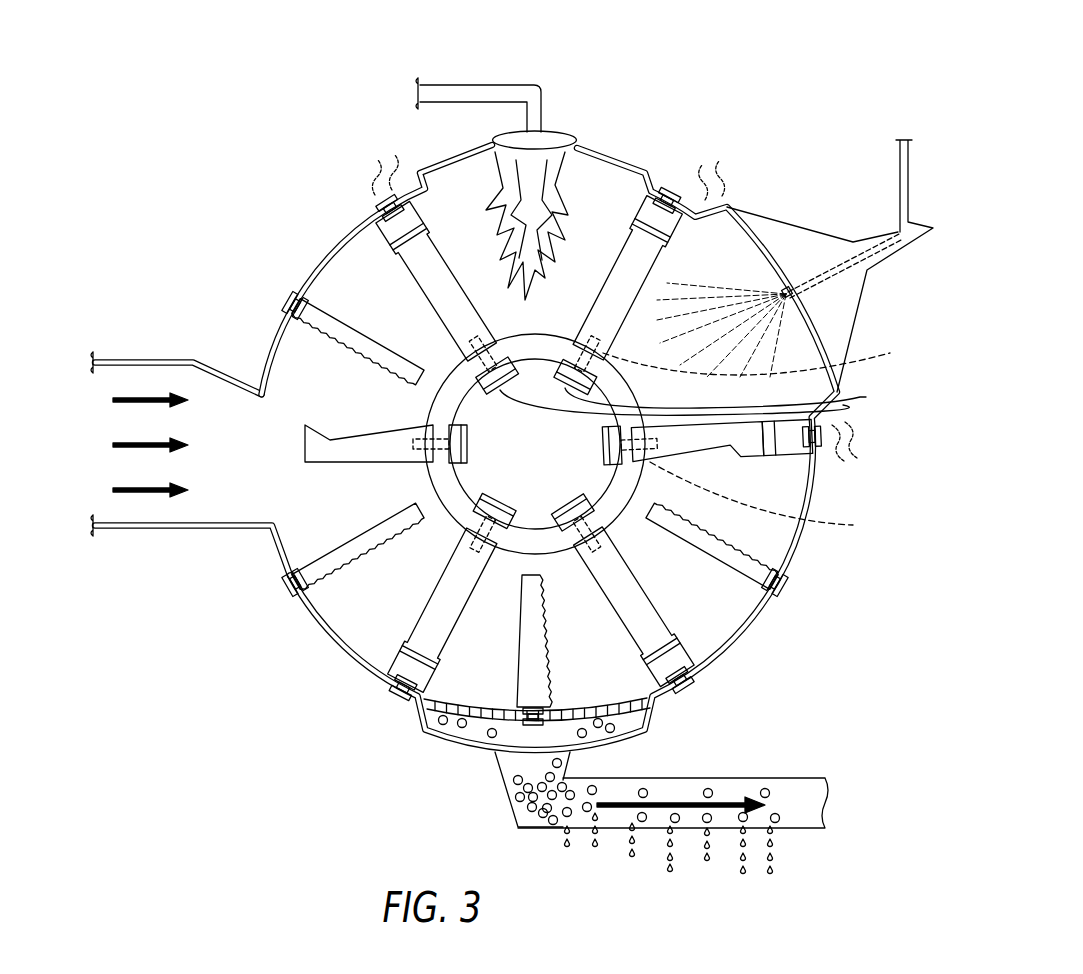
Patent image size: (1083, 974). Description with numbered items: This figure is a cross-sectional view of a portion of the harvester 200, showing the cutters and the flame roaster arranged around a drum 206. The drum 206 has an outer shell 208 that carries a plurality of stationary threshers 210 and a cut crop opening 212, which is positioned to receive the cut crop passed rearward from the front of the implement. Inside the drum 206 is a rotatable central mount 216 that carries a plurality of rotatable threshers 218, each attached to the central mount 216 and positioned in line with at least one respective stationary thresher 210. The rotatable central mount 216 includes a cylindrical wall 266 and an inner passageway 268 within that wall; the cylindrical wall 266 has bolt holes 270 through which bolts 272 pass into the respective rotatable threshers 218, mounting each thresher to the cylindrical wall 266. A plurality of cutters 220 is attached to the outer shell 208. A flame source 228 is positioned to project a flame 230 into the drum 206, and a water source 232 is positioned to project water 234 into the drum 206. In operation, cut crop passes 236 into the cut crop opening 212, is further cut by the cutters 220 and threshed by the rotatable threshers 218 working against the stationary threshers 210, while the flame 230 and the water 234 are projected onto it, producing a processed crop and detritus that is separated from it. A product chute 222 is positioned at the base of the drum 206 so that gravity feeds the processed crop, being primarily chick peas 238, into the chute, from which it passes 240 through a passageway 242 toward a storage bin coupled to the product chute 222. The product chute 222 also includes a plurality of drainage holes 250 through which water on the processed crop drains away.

The harvester 200 is at (775, 60).
The drum 206 is at (357, 222).
The outer shell 208 is at (822, 462).
The stationary threshers 210 is at (648, 208).
The cut crop opening 212 is at (70, 440).
The rotatable central mount 216 is at (627, 527).
The rotatable threshers 218 is at (330, 465).
The cutters 220 is at (360, 320).
The product chute 222 is at (487, 767).
The flame source 228 is at (555, 131).
The flame 230 is at (505, 185).
The water source 232 is at (816, 265).
The water 234 is at (722, 290).
The pass of cut crop 236 is at (147, 398).
The chick peas 238 is at (490, 736).
The pass of processed crop 240 is at (655, 808).
The passageway 242 is at (810, 778).
The drainage holes 250 is at (712, 833).
The cylindrical wall 266 is at (787, 553).
The inner passageway 268 is at (518, 451).
The bolt holes 270 is at (764, 434).
The bolts 272 is at (700, 398).